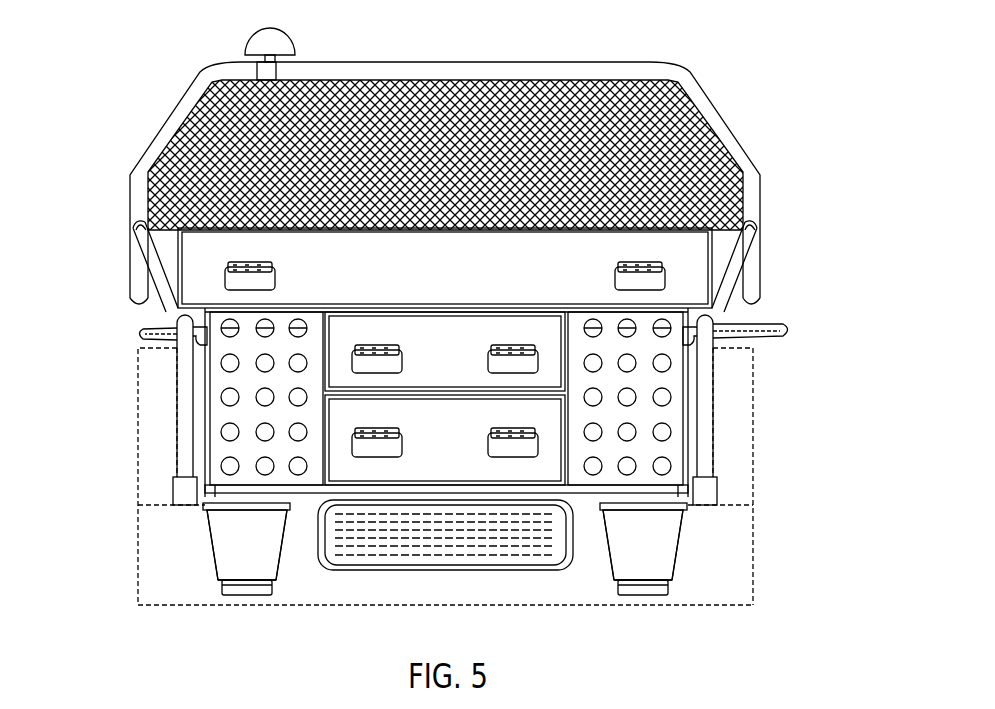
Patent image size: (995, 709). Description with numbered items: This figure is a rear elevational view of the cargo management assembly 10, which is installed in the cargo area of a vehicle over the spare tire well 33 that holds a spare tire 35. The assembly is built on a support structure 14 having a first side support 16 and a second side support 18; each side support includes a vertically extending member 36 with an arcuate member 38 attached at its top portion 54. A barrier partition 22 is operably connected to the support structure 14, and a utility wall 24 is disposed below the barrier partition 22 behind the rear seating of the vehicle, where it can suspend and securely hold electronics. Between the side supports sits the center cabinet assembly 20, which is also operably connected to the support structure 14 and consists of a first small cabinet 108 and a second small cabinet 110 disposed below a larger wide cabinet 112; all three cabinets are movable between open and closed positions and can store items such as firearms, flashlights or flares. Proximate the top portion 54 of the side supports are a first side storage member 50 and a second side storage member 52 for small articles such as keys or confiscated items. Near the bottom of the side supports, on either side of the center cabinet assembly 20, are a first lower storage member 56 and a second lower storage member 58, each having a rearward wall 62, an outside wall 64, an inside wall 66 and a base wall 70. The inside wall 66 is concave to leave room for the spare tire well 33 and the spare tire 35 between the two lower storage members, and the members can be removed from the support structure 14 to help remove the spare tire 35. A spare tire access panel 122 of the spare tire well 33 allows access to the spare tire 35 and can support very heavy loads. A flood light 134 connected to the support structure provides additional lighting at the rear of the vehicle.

The cargo management assembly 10 is at (765, 52).
The support structure 14 is at (130, 283).
The first side support 16 is at (178, 412).
The second side support 18 is at (718, 407).
The cabinet assembly 20 is at (228, 228).
The barrier partition 22 is at (680, 148).
The utility wall 24 is at (155, 477).
The spare tire well 33 is at (400, 585).
The spare tire 35 is at (495, 560).
The vertically extending member 36 is at (185, 437).
The arcuate member 38 is at (180, 333).
The first side storage member 50 is at (145, 333).
The second side storage member 52 is at (786, 330).
The top portion 54 is at (176, 318).
The first lower storage member 56 is at (256, 551).
The second lower storage member 58 is at (656, 551).
The rearward wall 62 is at (263, 565).
The outside wall 64 is at (212, 535).
The inside wall 66 is at (283, 540).
The base wall 70 is at (243, 592).
The first small cabinet 108 is at (465, 366).
The second small cabinet 110 is at (465, 451).
The larger wide cabinet 112 is at (465, 278).
The spare tire access panel 122 is at (655, 470).
The flood light 134 is at (278, 26).